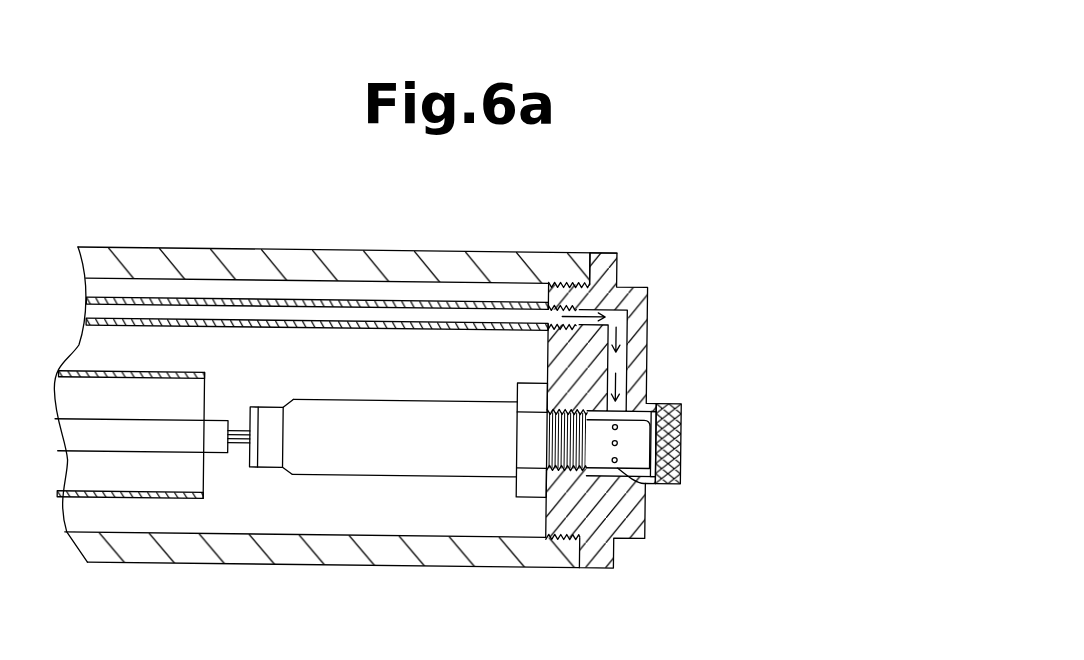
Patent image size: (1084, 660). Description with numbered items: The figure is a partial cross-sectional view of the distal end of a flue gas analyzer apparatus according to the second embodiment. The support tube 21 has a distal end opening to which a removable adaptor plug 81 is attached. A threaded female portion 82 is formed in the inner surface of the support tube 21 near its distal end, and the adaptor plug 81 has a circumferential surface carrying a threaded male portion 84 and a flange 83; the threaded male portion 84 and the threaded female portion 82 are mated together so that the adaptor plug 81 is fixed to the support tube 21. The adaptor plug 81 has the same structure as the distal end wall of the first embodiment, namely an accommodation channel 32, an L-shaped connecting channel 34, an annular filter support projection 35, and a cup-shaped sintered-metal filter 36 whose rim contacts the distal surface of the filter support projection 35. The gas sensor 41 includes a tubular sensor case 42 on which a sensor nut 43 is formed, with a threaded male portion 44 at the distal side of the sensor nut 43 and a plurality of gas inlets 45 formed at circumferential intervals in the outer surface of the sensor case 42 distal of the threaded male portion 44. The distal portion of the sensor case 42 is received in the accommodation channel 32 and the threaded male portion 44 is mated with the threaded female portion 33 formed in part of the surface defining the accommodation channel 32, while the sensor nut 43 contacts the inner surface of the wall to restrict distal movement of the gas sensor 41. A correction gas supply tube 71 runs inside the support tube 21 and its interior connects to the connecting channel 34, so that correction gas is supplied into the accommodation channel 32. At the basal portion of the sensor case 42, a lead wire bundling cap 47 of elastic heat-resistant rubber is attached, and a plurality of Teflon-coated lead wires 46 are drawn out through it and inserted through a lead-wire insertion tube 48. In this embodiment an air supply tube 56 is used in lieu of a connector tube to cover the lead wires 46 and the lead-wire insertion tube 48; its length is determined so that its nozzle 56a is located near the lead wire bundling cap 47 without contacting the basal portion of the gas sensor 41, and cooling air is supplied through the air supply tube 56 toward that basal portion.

The support tube 21 is at (290, 255).
The correction gas supply tube 71 is at (160, 297).
The air supply tube 56 is at (114, 371).
The nozzle 56a is at (203, 490).
The lead-wire insertion tube 48 is at (103, 425).
The lead wires 46 is at (242, 452).
The lead wire bundling cap 47 is at (259, 404).
The gas sensor 41 is at (369, 388).
The sensor case 42 is at (415, 408).
The sensor nut 43 is at (537, 385).
The threaded male portion 44 is at (562, 464).
The threaded female portion 33 is at (548, 425).
The adaptor plug 81 is at (644, 290).
The threaded female portion 82 is at (555, 278).
The flange 83 is at (614, 250).
The threaded male portion 84 is at (576, 279).
The connecting channel 34 is at (620, 362).
The accommodation channel 32 is at (654, 418).
The filter support projection 35 is at (652, 396).
The filter 36 is at (685, 398).
The gas inlets 45 is at (632, 466).